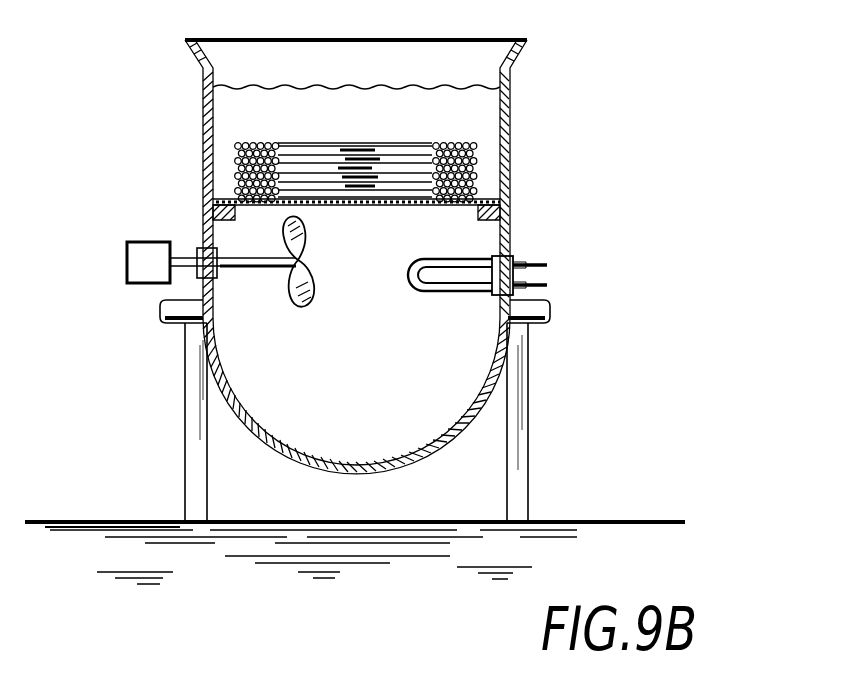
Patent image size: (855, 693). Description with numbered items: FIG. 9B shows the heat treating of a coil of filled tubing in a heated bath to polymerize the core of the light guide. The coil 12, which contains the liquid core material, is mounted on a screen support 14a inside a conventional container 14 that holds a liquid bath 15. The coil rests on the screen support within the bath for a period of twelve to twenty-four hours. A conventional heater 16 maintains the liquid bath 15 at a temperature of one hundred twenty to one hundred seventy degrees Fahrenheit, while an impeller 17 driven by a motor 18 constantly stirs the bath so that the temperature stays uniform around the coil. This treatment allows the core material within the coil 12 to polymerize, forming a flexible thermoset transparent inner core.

The coil 12 is at (405, 138).
The container 14 is at (505, 226).
The screen support 14a is at (490, 176).
The liquid bath 15 is at (509, 112).
The heater 16 is at (438, 290).
The impeller 17 is at (300, 298).
The motor 18 is at (128, 283).